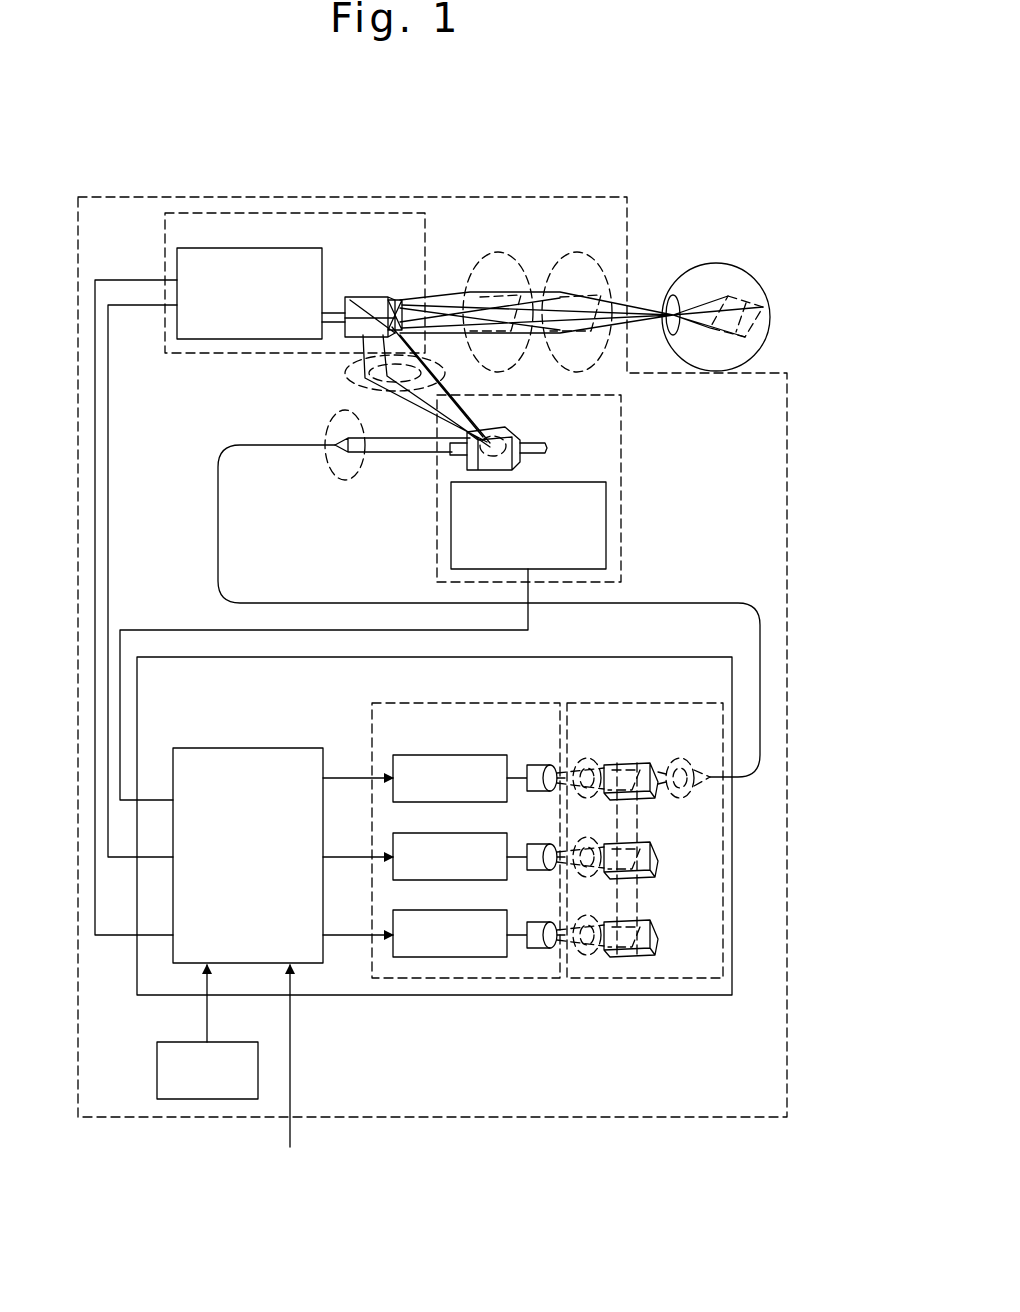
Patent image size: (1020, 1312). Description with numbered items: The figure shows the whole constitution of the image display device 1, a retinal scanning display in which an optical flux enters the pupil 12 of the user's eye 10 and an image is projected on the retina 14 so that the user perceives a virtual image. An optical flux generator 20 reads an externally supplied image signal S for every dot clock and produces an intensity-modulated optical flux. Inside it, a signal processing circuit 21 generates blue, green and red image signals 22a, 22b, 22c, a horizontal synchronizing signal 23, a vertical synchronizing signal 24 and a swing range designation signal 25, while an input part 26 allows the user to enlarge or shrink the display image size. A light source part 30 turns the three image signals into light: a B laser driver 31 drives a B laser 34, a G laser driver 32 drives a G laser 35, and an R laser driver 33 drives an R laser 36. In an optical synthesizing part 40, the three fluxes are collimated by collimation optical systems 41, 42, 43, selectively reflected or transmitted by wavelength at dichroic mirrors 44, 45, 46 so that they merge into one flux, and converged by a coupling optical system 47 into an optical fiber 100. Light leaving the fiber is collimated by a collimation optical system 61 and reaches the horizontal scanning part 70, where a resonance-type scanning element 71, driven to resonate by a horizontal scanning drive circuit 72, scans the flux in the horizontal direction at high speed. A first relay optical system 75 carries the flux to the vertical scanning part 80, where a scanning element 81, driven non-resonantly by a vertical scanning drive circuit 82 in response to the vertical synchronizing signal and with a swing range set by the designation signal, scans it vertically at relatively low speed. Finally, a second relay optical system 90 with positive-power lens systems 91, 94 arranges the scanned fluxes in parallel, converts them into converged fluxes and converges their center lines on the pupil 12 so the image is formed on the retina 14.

The image display device 1 is at (400, 195).
The user's eye 10 is at (735, 250).
The pupil 12 is at (666, 336).
The retina 14 is at (766, 335).
The optical flux generator 20 is at (732, 924).
The signal processing circuit 21 is at (262, 748).
The image signal 22a is at (350, 778).
The image signal 22b is at (350, 857).
The image signal 22c is at (350, 935).
The horizontal synchronizing signal 23 is at (120, 775).
The vertical synchronizing signal 24 is at (95, 890).
The swing range designation signal 25 is at (108, 620).
The input part 26 is at (175, 1042).
The light source part 30 is at (497, 703).
The B laser driver 31 is at (462, 755).
The G laser driver 32 is at (462, 833).
The R laser driver 33 is at (462, 910).
The B laser 34 is at (543, 765).
The G laser 35 is at (543, 844).
The R laser 36 is at (543, 922).
The optical synthesizing part 40 is at (627, 703).
The collimation optical system 41 is at (596, 756).
The collimation optical system 42 is at (596, 834).
The collimation optical system 43 is at (596, 912).
The dichroic mirror 44 is at (638, 763).
The dichroic mirror 45 is at (638, 842).
The dichroic mirror 46 is at (638, 920).
The coupling optical system 47 is at (683, 758).
The collimation optical system 61 is at (320, 460).
The horizontal scanning part 70 is at (635, 426).
The scanning element 71 is at (506, 431).
The horizontal scanning drive circuit 72 is at (556, 482).
The first relay optical system 75 is at (344, 373).
The vertical scanning part 80 is at (242, 356).
The scanning element 81 is at (372, 297).
The vertical scanning drive circuit 82 is at (262, 248).
The second relay optical system 90 is at (530, 250).
The lens system 91 is at (492, 252).
The lens system 94 is at (600, 252).
The optical fiber 100 is at (716, 598).